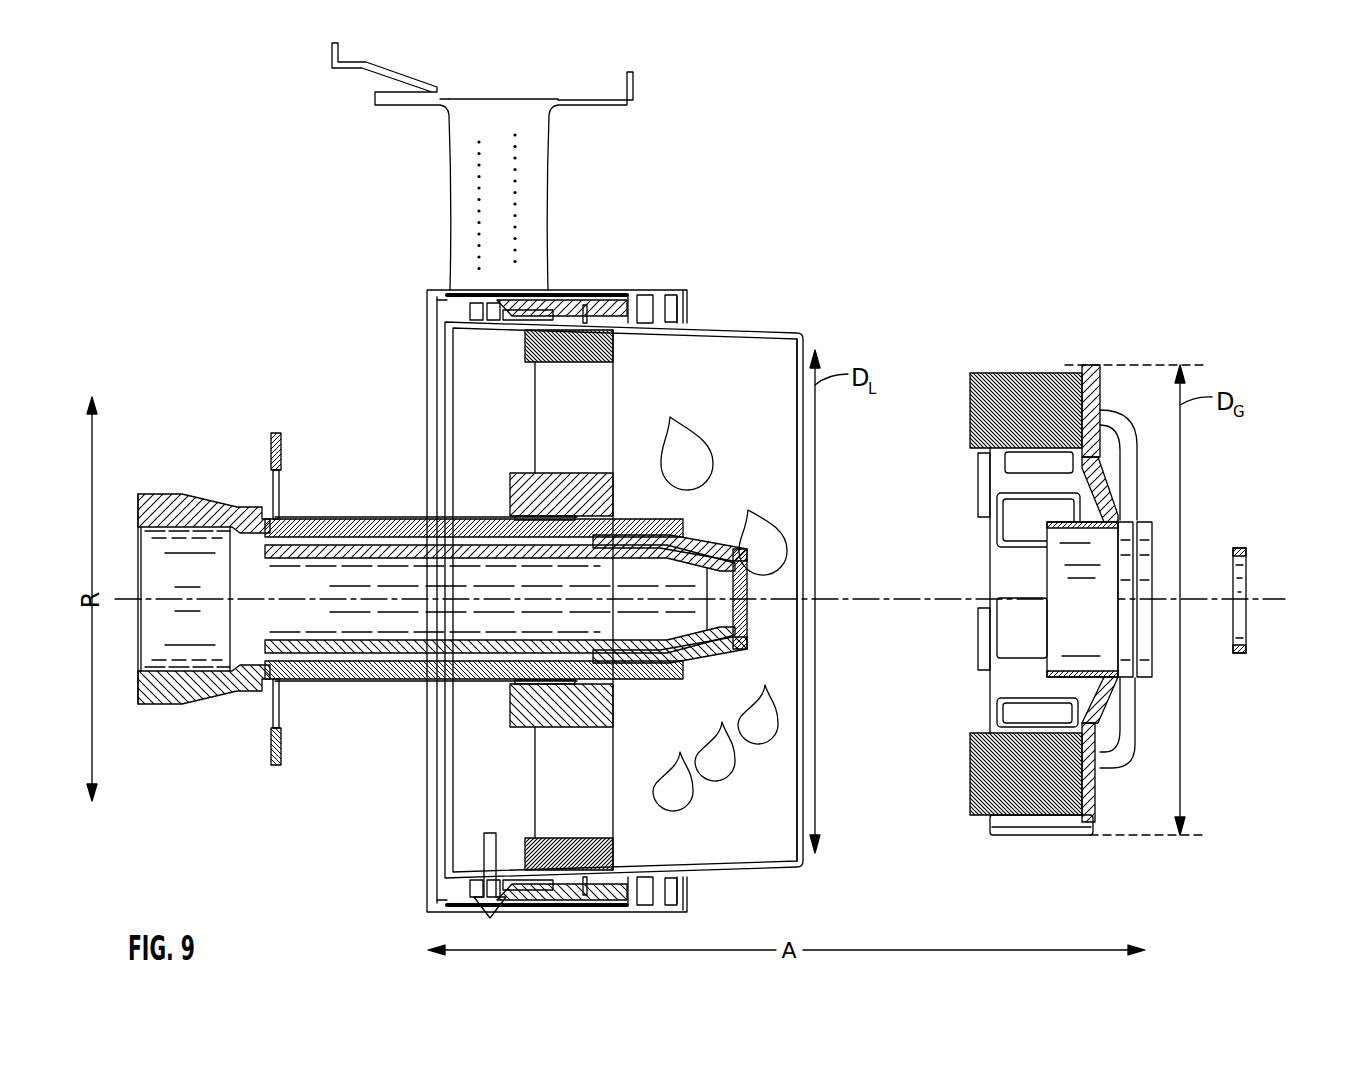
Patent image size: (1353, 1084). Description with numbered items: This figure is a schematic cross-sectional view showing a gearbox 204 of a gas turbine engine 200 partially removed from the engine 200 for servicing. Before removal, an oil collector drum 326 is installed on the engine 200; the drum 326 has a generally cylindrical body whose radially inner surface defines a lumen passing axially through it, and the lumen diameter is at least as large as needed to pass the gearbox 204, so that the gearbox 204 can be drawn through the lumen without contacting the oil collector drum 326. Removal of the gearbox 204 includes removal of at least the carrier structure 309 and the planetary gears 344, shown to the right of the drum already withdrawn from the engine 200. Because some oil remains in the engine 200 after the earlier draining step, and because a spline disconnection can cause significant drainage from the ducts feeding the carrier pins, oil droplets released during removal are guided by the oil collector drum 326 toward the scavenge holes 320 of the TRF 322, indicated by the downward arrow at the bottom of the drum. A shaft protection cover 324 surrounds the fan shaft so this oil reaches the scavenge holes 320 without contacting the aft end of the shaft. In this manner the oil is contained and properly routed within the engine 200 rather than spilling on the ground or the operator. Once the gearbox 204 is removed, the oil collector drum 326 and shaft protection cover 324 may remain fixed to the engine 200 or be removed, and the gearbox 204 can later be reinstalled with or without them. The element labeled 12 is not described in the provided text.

The TRF 322 is at (527, 191).
The engine 200 is at (707, 292).
The oil collector drum 326 is at (777, 446).
The shaft protection cover 324 is at (735, 623).
The scavenge holes 320 is at (488, 845).
The gearbox 204 is at (1082, 365).
The carrier structure 309 is at (1002, 550).
The planetary gears 344 is at (1015, 648).
The ring / washer 12 is at (1263, 600).